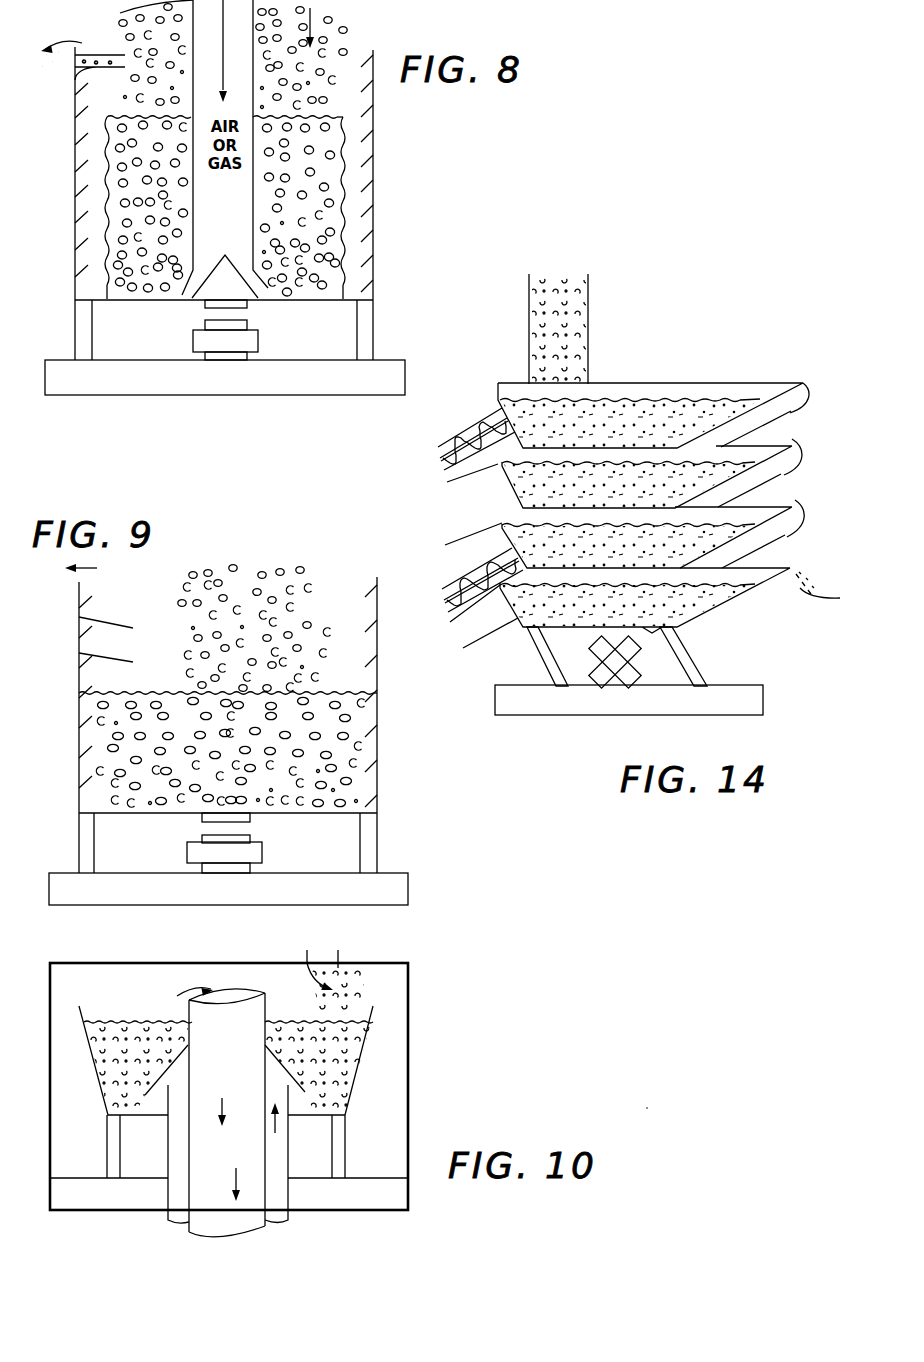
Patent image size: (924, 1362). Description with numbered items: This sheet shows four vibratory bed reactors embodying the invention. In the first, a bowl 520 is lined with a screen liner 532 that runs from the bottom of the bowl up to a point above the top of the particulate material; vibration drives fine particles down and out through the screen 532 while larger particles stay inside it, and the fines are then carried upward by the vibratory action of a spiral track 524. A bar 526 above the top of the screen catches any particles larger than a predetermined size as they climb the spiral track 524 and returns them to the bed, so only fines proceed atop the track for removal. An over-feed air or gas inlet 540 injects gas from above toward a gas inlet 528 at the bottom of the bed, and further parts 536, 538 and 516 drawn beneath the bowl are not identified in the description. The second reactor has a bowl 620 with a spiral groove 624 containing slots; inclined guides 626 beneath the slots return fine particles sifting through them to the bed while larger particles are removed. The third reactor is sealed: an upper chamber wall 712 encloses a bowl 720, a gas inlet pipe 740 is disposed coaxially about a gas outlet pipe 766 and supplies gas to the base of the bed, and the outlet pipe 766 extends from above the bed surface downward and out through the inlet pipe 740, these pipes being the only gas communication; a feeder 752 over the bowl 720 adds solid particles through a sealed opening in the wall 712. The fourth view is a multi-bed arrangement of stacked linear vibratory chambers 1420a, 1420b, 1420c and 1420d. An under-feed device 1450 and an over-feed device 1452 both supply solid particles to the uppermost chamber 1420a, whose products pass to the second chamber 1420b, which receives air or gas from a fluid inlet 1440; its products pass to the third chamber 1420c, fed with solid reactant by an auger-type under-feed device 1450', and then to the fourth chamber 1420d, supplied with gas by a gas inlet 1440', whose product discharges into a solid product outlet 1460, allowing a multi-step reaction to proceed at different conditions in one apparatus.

In FIG. 8, the over-feed air or gas inlet 540 is at (130, 52).
In FIG. 8, the bar 526 is at (82, 68).
In FIG. 8, the spiral track 524 is at (73, 151).
In FIG. 8, the screen liner 532 is at (341, 152).
In FIG. 8, the bowl 520 is at (373, 218).
In FIG. 8, the support legs 536 is at (77, 342).
In FIG. 8, the gas inlet 528 is at (192, 287).
In FIG. 8, the vibrator 538 is at (205, 340).
In FIG. 8, the base 516 is at (419, 371).
In FIG. 9, the spiral groove 624 is at (100, 657).
In FIG. 9, the inclined guides 626 is at (80, 655).
In FIG. 9, the bowl 620 is at (377, 718).
In FIG. 10, the feeder 752 is at (340, 955).
In FIG. 10, the upper chamber wall 712 is at (409, 995).
In FIG. 10, the bowl 720 is at (373, 1052).
In FIG. 10, the gas outlet pipe 766 is at (265, 1149).
In FIG. 10, the gas inlet pipe 740 is at (288, 1192).
In FIG. 14, the over-feed device 1452 is at (588, 322).
In FIG. 14, the first chamber 1420a is at (762, 411).
In FIG. 14, the second chamber 1420b is at (757, 478).
In FIG. 14, the third chamber 1420c is at (758, 538).
In FIG. 14, the fourth chamber 1420d is at (690, 627).
In FIG. 14, the solid product outlet 1460 is at (818, 602).
In FIG. 14, the under-feed device 1450 is at (450, 439).
In FIG. 14, the fluid inlet 1440 is at (447, 504).
In FIG. 14, the auger-type solid particle under-feed device 1450' is at (451, 575).
In FIG. 14, the gas inlet 1440' is at (463, 616).